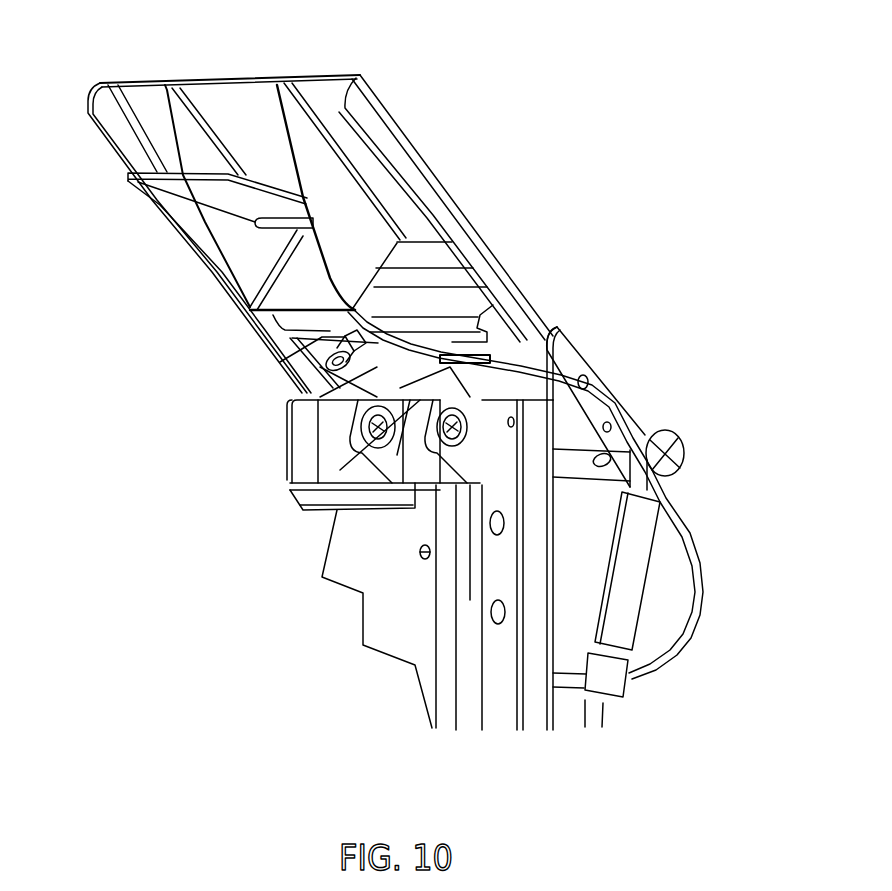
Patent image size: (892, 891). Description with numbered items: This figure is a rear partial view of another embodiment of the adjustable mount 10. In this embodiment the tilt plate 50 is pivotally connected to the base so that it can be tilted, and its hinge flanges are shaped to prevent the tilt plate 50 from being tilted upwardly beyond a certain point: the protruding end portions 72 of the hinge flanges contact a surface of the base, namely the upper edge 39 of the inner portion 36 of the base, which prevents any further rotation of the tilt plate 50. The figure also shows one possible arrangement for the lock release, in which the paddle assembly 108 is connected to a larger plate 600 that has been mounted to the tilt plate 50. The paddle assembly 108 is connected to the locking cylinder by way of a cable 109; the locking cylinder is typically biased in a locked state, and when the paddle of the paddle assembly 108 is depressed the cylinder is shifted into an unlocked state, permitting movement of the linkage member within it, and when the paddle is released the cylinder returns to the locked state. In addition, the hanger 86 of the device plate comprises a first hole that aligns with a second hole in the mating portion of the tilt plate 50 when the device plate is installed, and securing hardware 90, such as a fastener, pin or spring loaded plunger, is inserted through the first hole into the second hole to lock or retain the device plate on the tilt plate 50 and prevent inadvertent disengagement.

The plate 600 is at (138, 97).
The paddle assembly 108 is at (240, 263).
The hanger 86 is at (273, 317).
The securing hardware 90 is at (323, 363).
The upper edge 39 is at (430, 485).
The protruding end portions 72 is at (345, 512).
The inner portion 36 is at (393, 603).
The adjustable mount 10 is at (551, 745).
The tilt plate 50 is at (575, 440).
The cable 109 is at (700, 581).